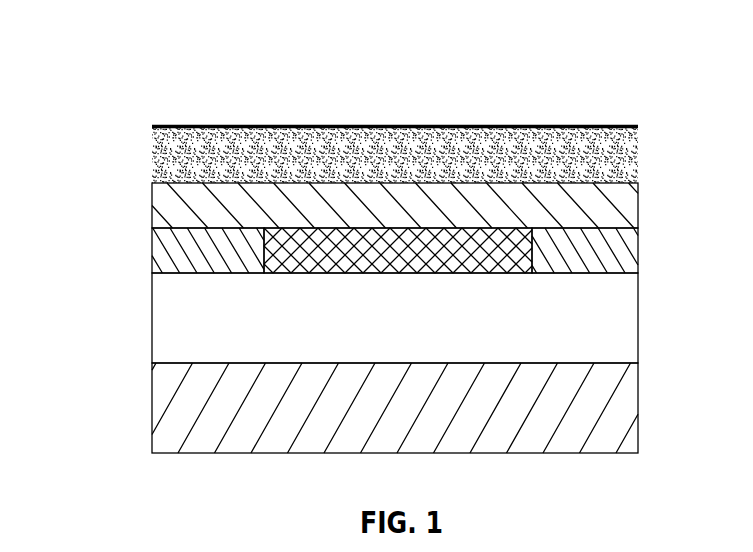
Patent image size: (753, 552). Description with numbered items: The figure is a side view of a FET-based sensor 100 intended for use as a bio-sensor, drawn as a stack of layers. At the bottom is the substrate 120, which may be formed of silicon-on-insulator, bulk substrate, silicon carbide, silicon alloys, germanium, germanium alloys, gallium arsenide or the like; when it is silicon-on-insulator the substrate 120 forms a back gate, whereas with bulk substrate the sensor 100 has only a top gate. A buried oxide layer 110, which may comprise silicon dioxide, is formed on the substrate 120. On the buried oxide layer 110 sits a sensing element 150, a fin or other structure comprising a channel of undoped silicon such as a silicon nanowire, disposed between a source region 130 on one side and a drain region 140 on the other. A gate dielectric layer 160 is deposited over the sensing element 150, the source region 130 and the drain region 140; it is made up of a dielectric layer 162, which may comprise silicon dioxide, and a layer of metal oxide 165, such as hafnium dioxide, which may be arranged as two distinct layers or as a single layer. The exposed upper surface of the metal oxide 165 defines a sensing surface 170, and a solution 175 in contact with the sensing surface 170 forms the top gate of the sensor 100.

The sensor 100 is at (70, 50).
The buried oxide layer 110 is at (412, 332).
The substrate 120 is at (412, 423).
The source region 130 is at (227, 262).
The drain region 140 is at (607, 262).
The sensing element 150 is at (412, 262).
The gate dielectric layer 160 is at (143, 115).
The dielectric layer 162 is at (412, 217).
The metal oxide 165 is at (412, 165).
The sensing surface 170 is at (602, 127).
The solution 175 is at (342, 67).